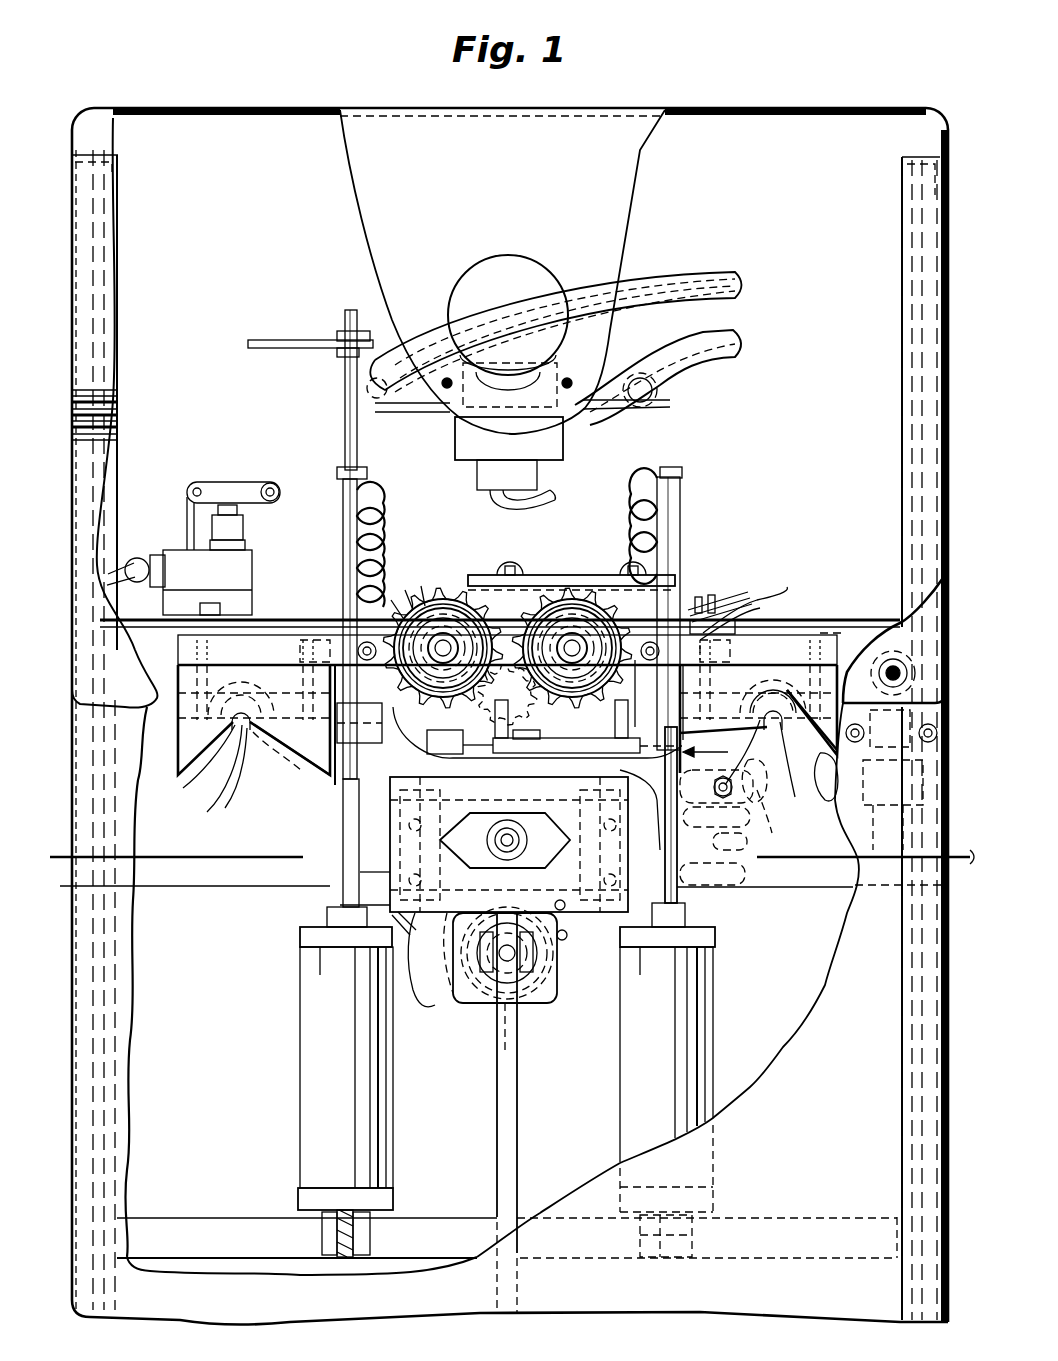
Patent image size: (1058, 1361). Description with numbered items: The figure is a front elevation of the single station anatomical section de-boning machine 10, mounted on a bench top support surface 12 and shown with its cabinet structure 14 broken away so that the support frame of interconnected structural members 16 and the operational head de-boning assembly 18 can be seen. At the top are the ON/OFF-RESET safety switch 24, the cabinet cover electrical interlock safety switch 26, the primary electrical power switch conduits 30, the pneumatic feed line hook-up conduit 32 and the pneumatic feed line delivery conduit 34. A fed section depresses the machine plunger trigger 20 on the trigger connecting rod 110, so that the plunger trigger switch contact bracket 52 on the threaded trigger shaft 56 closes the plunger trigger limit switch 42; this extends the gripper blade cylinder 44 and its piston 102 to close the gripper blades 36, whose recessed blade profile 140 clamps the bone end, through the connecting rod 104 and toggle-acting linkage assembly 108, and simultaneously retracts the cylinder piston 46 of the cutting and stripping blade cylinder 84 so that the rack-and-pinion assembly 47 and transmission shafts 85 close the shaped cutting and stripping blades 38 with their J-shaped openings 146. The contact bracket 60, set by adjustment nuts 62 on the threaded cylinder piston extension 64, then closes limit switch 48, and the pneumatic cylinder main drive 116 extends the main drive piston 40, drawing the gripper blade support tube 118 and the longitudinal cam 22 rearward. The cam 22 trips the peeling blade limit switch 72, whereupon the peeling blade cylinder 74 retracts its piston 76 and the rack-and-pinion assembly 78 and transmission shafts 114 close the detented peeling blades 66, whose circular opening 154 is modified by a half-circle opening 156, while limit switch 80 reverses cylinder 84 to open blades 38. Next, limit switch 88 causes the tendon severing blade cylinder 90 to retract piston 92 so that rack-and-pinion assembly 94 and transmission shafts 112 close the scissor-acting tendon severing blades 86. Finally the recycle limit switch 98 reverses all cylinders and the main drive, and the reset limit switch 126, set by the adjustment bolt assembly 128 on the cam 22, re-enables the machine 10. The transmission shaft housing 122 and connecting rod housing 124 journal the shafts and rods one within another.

The single station anatomical section de-boning machine 10 is at (630, 50).
The bench top support surface 12 is at (172, 858).
The cabinet structure 14 is at (132, 1058).
The structural members 16 is at (120, 226).
The operational head de-boning assembly 18 is at (735, 992).
The machine plunger trigger 20 is at (407, 987).
The longitudinal cam 22 is at (570, 738).
The ON/OFF-RESET safety switch 24 is at (527, 257).
The cabinet cover electrical interlock safety switch 26 is at (883, 620).
The primary electrical power switch conduits 30 is at (547, 497).
The pneumatic feed line hook-up conduit 32 is at (683, 273).
The pneumatic feed line delivery conduit 34 is at (720, 327).
The toggle-acting anatomical section gripper blades 36 is at (613, 967).
The shaped cooperative meat cutting and stripping blades 38 is at (178, 733).
The main drive piston 40 is at (490, 997).
The plunger trigger electrical solenoid air valve limit switch 42 is at (290, 620).
The gripper blade cylinder 44 is at (688, 823).
The meat cutting and stripping blade cylinder piston 46 is at (333, 872).
The meat cutting and stripping rack-and-pinion assembly 47 is at (392, 557).
The main drive piston electrical solenoid air valve limit switch 48 is at (243, 528).
The plunger trigger switch contact bracket 52 is at (307, 763).
The threaded trigger shaft 56 is at (240, 705).
The main drive piston limit switch contact bracket 60 is at (268, 340).
The adjustment nuts 62 is at (337, 336).
The threaded cylinder piston extension 64 is at (356, 289).
The detented peeling blades 66 is at (253, 732).
The detented peeling blade electrical solenoid air valve limit switch 72 is at (425, 750).
The detented peeling blade cylinder 74 is at (618, 1057).
The detented peeling blade cylinder piston 76 is at (680, 873).
The detented peeling blade rack-and-pinion assembly 78 is at (606, 596).
The meat cutting and stripping blade electrical solenoid air valve limit switch 80 is at (757, 610).
The meat cutting and stripping blade cylinder 84 is at (474, 1068).
The blade rotating transmission shafts 85 is at (537, 540).
The scissor-acting tendon severing blades 86 is at (193, 785).
The tendon severing blade electrical solenoid air valve limit switch 88 is at (530, 726).
The tendon severing blade cylinder 90 is at (507, 1128).
The tendon severing blade cylinder piston 92 is at (333, 895).
The tendon severing blade rack-and-pinion assembly 94 is at (467, 550).
The machine recycle electrical solenoid air valve limit switch 98 is at (717, 578).
The gripper blade cylinder piston 102 is at (683, 848).
The gripper blade connecting rod 104 is at (452, 993).
The toggle-acting linkage assembly 108 is at (499, 841).
The trigger connecting rod 110 is at (560, 910).
The tendon severing blade rotating transmission shafts 112 is at (478, 585).
The peeling blade rotating transmission shafts 114 is at (693, 473).
The pneumatic cylinder main drive 116 is at (503, 1050).
The gripper blade support tube 118 is at (562, 940).
The transmission shaft housing 122 is at (427, 555).
The connecting rod housing 124 is at (333, 797).
The reset limit switch 126 is at (767, 830).
The reset limit switch adjustment bolt assembly 128 is at (728, 751).
The recessed blade profile 140 is at (383, 977).
The J-shaped opening 146 is at (223, 788).
The detented circular opening 154 is at (243, 660).
The half-circle opening 156 is at (750, 690).